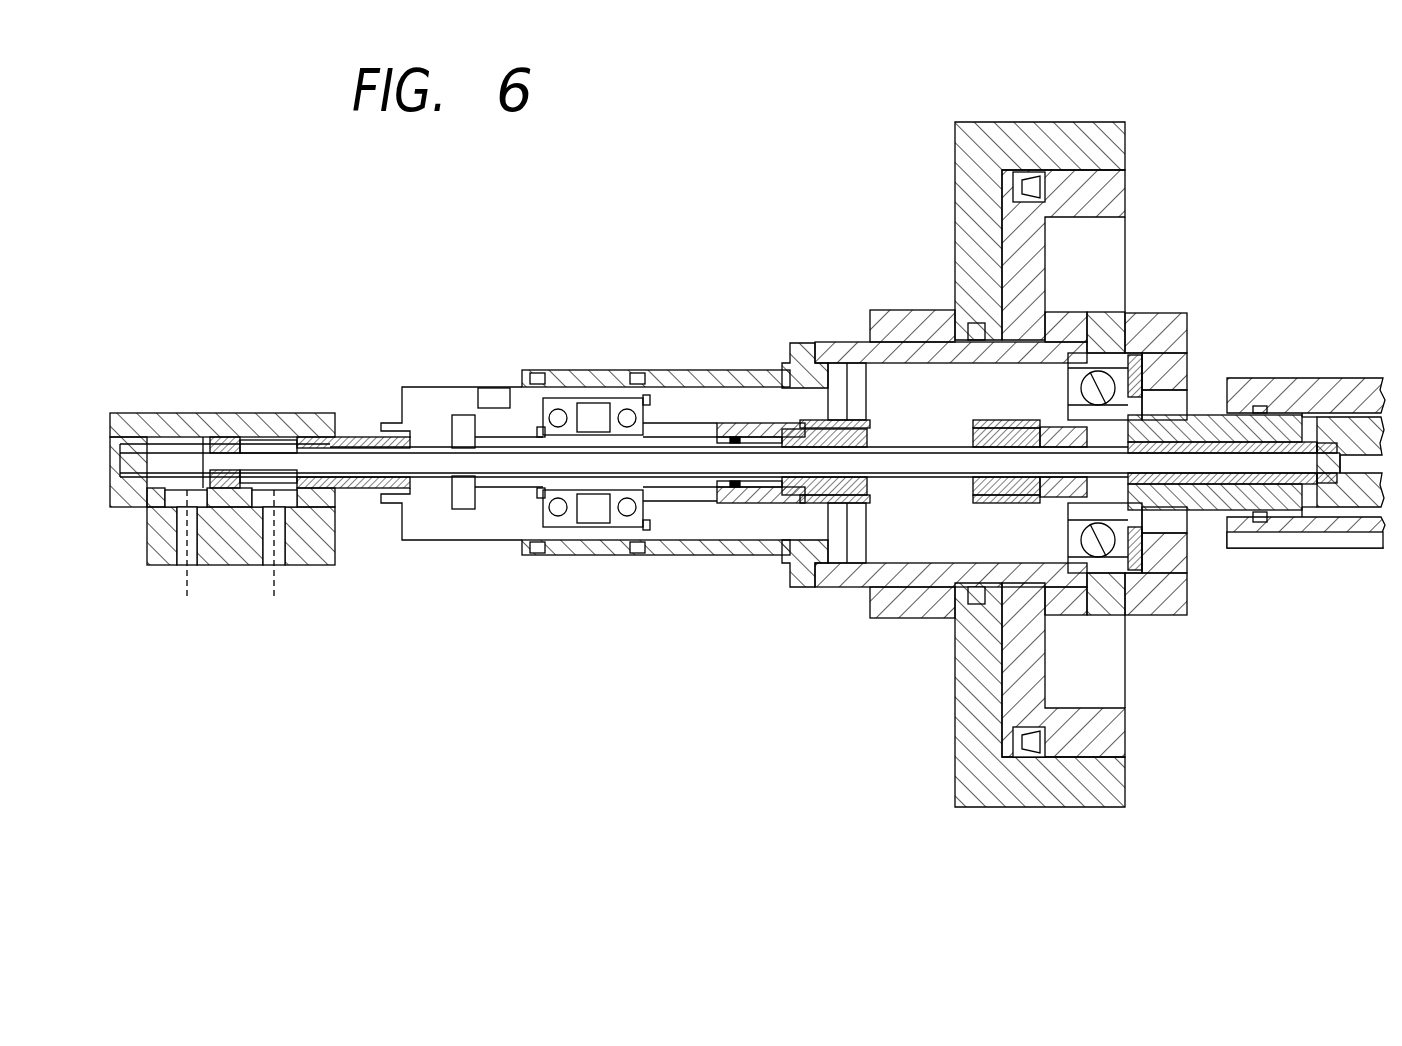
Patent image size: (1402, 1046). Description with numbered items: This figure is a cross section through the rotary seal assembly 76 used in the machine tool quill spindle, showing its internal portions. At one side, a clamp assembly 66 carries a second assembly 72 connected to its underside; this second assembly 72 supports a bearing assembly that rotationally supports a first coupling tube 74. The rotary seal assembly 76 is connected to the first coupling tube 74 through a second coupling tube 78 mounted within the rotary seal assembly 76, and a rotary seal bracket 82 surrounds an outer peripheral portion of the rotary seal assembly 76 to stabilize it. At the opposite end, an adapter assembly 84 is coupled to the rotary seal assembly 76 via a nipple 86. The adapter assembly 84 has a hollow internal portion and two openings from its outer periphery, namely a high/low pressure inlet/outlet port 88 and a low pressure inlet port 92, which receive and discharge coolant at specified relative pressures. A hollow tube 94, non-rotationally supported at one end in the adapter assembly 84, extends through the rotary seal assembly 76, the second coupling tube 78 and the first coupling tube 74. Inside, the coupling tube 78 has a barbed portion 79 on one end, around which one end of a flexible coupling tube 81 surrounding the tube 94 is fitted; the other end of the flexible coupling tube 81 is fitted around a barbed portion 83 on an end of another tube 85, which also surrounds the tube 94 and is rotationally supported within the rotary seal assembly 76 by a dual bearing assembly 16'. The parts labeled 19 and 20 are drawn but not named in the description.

The dual bearing assembly 16' is at (859, 528).
The spacer 19 is at (740, 487).
The sleeve 20 is at (760, 503).
The clamp assembly 66 is at (975, 808).
The second assembly 72 is at (1130, 735).
The first coupling tube 74 is at (1197, 520).
The rotary seal assembly 76 is at (425, 388).
The second coupling tube 78 is at (1007, 430).
The barbed portion 79 is at (967, 430).
The flexible coupling tube 81 is at (880, 503).
The rotary seal bracket 82 is at (600, 370).
The barbed portion 83 is at (855, 420).
The adapter assembly 84 is at (188, 413).
The tube 85 is at (838, 420).
The nipple 86 is at (358, 488).
The high/low pressure inlet/outlet port 88 is at (185, 580).
The low pressure inlet port 92 is at (274, 578).
The hollow tube 94 is at (263, 440).